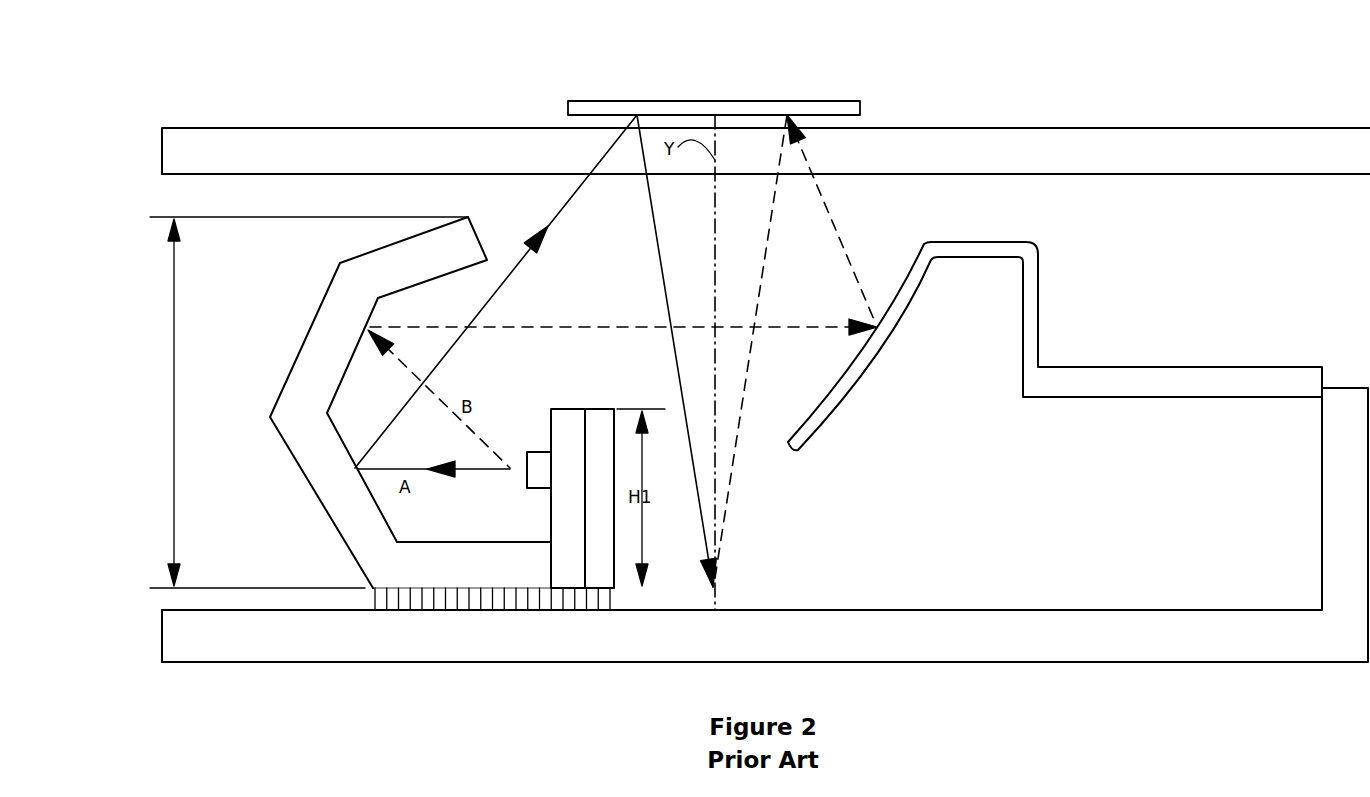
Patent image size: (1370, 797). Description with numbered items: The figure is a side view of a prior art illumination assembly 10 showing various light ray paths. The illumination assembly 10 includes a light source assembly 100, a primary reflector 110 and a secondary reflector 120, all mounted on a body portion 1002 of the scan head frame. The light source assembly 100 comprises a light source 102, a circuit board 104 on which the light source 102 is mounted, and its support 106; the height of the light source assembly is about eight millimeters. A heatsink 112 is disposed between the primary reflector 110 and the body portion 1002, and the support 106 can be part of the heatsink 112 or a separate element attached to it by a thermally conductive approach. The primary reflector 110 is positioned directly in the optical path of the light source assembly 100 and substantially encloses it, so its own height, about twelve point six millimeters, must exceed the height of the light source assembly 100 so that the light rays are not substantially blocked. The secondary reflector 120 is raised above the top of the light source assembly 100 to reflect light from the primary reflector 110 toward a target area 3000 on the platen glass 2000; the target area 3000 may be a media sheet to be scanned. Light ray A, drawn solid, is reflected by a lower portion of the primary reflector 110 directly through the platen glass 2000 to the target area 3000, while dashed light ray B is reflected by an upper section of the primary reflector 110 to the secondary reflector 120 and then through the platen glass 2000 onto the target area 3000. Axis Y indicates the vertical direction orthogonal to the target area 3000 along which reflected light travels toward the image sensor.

The illumination assembly 10 is at (150, 200).
The light source assembly 100 is at (579, 473).
The light source 102 is at (540, 492).
The circuit board 104 is at (565, 410).
The support 106 is at (597, 410).
The primary reflector 110 is at (292, 457).
The heatsink 112 is at (615, 597).
The secondary reflector 120 is at (898, 297).
The body portion 1002 is at (807, 610).
The platen glass 2000 is at (242, 128).
The target area 3000 is at (612, 101).